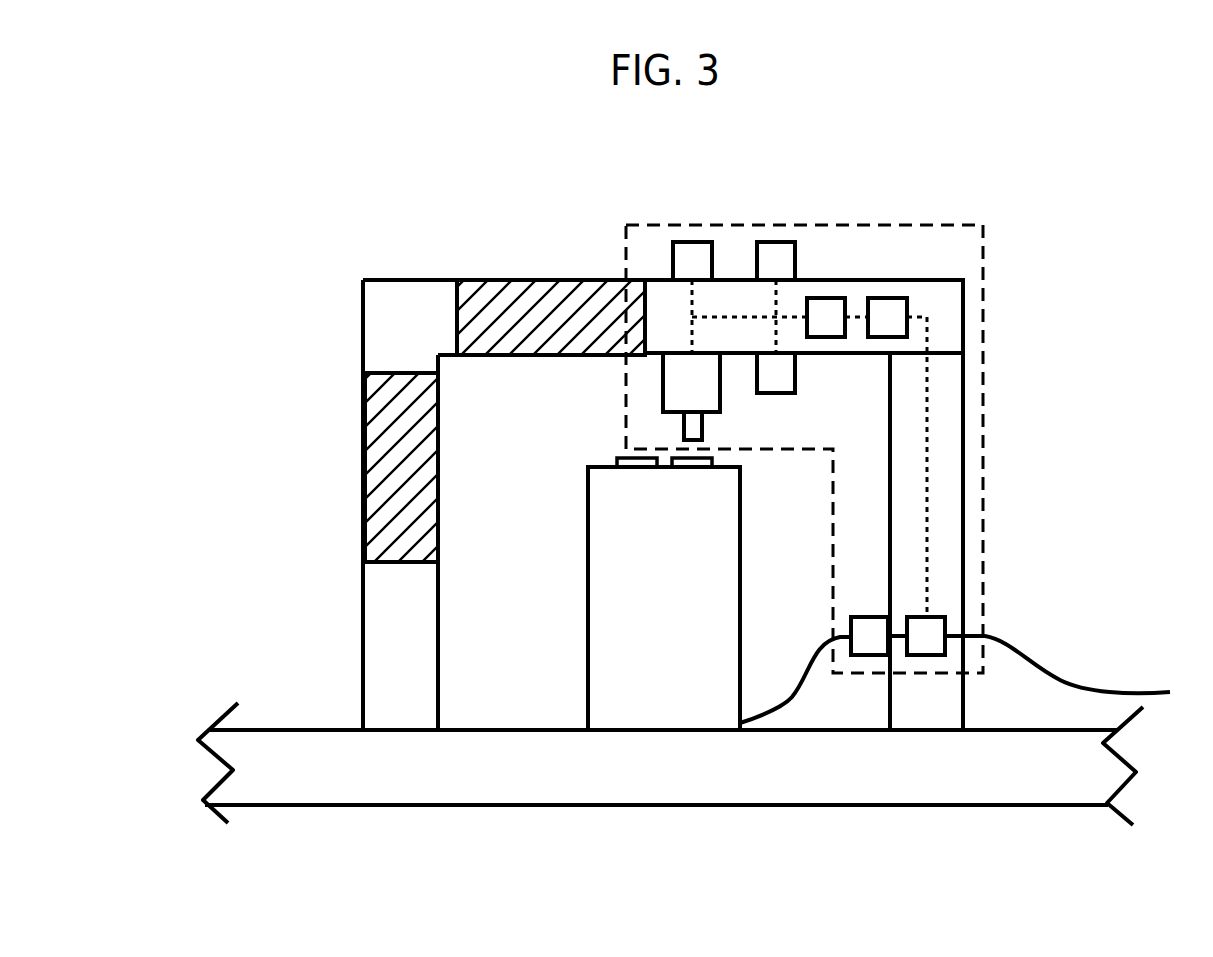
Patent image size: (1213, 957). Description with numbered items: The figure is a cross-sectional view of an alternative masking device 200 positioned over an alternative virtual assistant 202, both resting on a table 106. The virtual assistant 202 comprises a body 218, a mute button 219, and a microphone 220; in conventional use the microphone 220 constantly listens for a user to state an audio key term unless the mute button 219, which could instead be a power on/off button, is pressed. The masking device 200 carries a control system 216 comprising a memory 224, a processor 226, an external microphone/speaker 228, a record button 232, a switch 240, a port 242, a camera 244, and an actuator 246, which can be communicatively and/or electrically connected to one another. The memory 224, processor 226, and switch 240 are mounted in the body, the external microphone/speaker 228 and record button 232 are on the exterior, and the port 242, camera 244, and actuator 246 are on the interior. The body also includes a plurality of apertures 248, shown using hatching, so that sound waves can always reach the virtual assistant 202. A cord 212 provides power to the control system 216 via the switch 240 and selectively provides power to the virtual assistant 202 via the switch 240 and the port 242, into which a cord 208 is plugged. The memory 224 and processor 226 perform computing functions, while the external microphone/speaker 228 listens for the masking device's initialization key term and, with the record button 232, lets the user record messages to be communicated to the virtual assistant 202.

The table 106 is at (628, 807).
The masking device 200 is at (383, 278).
The virtual assistant 202 is at (587, 627).
The cord 208 is at (792, 697).
The cord 212 is at (1053, 677).
The control system 216 is at (983, 420).
The body 218 is at (588, 575).
The mute button 219 is at (693, 468).
The microphone 220 is at (623, 457).
The memory 224 is at (908, 298).
The processor 226 is at (845, 298).
The external microphone/speaker 228 is at (778, 243).
The record button 232 is at (693, 243).
The switch 240 is at (945, 617).
The port 242 is at (870, 617).
The camera 244 is at (795, 373).
The actuator 246 is at (663, 373).
The apertures 248 is at (533, 295).